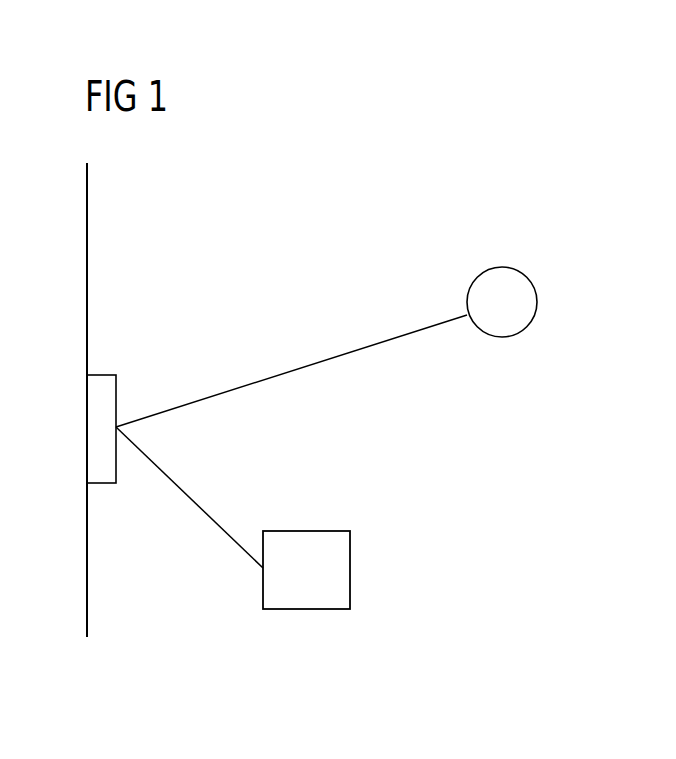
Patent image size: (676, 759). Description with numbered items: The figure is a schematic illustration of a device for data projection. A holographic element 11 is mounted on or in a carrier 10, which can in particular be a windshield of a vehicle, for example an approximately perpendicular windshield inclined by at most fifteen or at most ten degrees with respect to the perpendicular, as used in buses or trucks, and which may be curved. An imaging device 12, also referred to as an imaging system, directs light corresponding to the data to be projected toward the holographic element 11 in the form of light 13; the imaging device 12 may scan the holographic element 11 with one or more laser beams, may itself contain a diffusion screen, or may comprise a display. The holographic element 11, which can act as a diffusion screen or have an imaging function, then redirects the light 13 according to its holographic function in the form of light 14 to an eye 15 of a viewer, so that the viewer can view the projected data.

The carrier 10 is at (88, 243).
The holographic element 11 is at (103, 373).
The imaging device 12 is at (305, 530).
The light 13 is at (182, 484).
The light 14 is at (312, 360).
The eye 15 is at (500, 267).